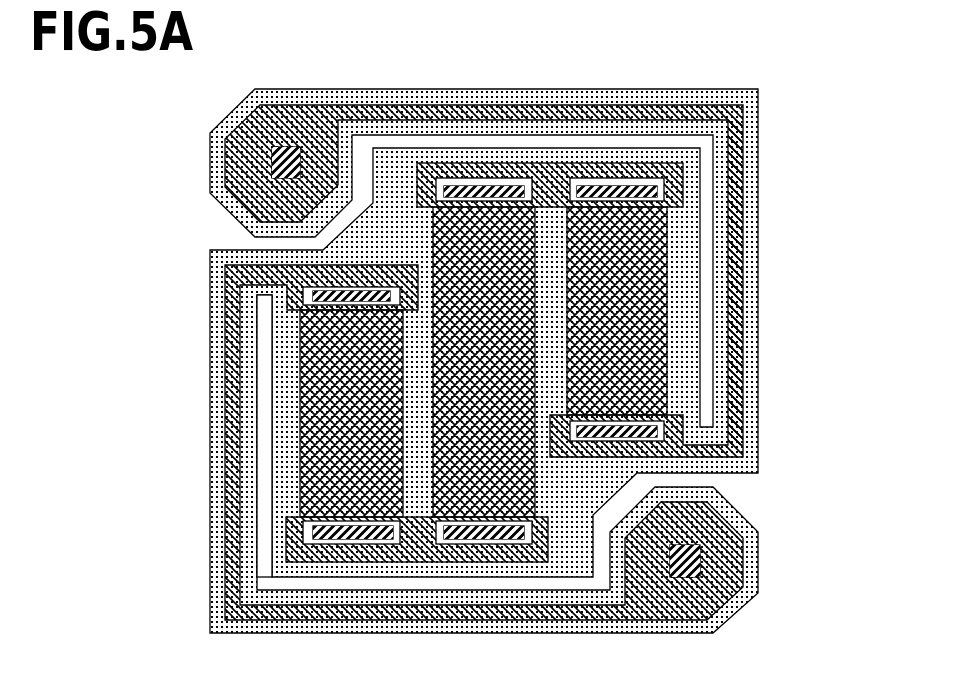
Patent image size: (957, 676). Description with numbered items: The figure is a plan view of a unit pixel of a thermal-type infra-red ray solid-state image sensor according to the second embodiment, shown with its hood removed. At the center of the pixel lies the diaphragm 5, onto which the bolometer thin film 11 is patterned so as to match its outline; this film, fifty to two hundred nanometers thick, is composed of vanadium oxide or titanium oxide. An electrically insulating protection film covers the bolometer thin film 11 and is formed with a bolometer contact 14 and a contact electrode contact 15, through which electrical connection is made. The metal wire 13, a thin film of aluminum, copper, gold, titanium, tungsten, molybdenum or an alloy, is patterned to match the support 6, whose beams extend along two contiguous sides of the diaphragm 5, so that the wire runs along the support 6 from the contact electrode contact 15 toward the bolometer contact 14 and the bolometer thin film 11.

The diaphragm 5 is at (278, 383).
The support 6 is at (760, 212).
The bolometer thin film 11 is at (511, 268).
The metal wire 13 is at (748, 340).
The bolometer contact 14 is at (471, 185).
The contact electrode contact 15 is at (283, 142).